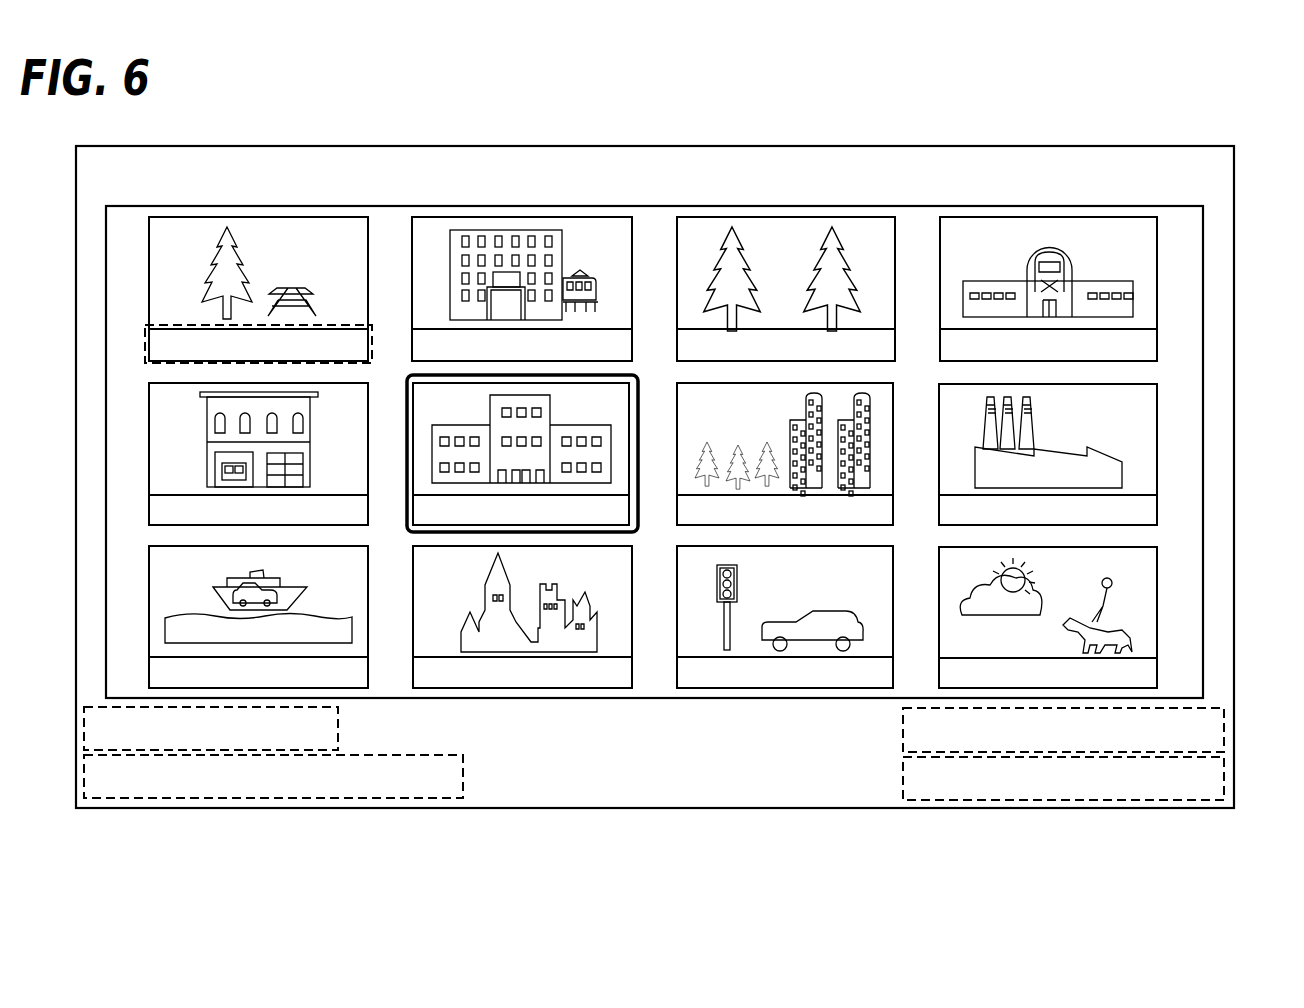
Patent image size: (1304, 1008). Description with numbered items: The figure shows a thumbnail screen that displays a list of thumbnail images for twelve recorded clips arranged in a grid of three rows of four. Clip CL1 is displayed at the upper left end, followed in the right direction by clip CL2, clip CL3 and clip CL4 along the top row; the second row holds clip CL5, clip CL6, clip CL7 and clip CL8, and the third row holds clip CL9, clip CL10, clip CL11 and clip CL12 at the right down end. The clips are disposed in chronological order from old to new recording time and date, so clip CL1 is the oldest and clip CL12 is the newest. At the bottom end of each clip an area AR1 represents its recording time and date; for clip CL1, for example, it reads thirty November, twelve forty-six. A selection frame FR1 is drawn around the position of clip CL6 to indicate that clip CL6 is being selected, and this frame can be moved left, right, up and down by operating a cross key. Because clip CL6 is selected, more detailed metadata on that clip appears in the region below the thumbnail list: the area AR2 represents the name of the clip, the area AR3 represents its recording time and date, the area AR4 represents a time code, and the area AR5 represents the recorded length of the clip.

The clip CL1 is at (149, 272).
The clip CL2 is at (477, 217).
The clip CL3 is at (777, 217).
The clip CL4 is at (1157, 278).
The clip CL5 is at (149, 447).
The clip CL6 is at (636, 403).
The clip CL7 is at (895, 405).
The clip CL8 is at (1157, 442).
The clip CL9 is at (149, 612).
The clip CL10 is at (592, 688).
The clip CL11 is at (715, 688).
The clip CL12 is at (1157, 607).
The selection frame FR1 is at (407, 428).
The recording time and date area AR1 is at (145, 350).
The clip name area AR2 is at (84, 738).
The recording time and date area AR3 is at (84, 788).
The time code area AR4 is at (1224, 728).
The recorded length area AR5 is at (1224, 776).